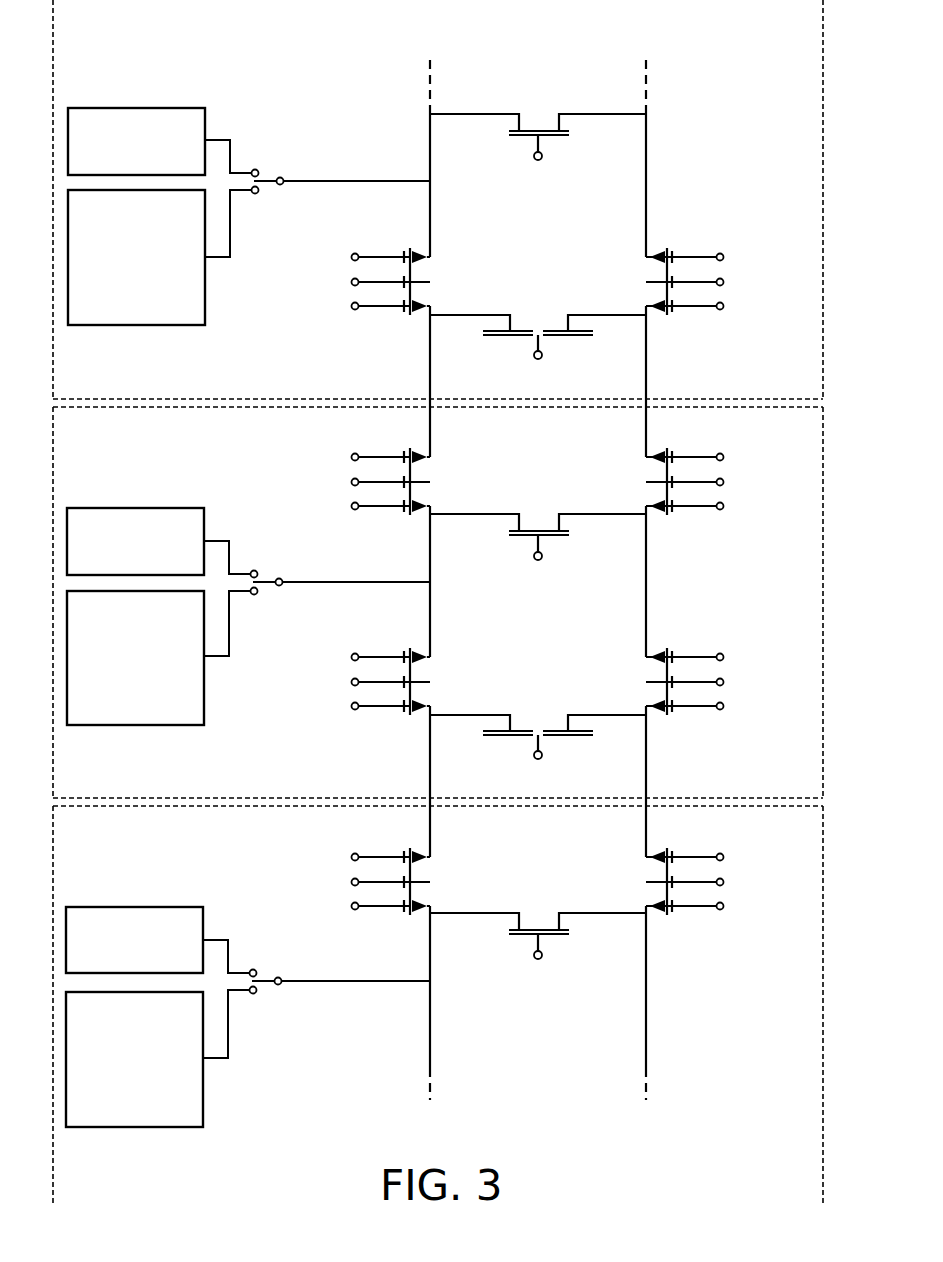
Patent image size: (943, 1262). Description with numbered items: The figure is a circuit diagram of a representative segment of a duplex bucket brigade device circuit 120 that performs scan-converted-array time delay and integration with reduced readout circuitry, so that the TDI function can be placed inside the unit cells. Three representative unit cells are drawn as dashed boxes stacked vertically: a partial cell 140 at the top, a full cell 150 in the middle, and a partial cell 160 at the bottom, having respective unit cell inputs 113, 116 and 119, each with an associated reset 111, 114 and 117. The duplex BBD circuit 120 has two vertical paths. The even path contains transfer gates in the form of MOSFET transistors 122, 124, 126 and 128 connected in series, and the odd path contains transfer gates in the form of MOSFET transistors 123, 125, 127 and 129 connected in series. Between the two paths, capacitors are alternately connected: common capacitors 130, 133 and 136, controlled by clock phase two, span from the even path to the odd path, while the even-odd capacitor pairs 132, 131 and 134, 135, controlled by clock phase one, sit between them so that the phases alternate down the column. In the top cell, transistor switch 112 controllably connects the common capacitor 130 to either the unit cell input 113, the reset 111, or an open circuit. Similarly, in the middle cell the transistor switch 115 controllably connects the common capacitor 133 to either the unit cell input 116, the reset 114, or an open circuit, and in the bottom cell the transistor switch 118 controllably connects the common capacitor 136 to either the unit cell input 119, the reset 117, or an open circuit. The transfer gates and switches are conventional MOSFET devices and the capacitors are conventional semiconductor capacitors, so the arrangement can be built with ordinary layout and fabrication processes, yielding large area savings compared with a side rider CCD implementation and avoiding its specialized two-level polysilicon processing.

The reset 111 is at (118, 164).
The transistor switch 112 is at (268, 178).
The unit cell input 113 is at (118, 307).
The reset 114 is at (117, 565).
The transistor switch 115 is at (267, 579).
The unit cell input 116 is at (117, 708).
The reset 117 is at (116, 963).
The transistor switch 118 is at (266, 978).
The unit cell input 119 is at (116, 1109).
The duplex BBD circuit 120 is at (544, 59).
The MOSFET transistor 122 is at (406, 252).
The MOSFET transistor 123 is at (675, 313).
The MOSFET transistor 124 is at (406, 452).
The MOSFET transistor 125 is at (675, 513).
The MOSFET transistor 126 is at (406, 652).
The MOSFET transistor 127 is at (675, 713).
The MOSFET transistor 128 is at (406, 852).
The MOSFET transistor 129 is at (675, 913).
The common capacitor 130 is at (552, 139).
The odd capacitor 131 is at (554, 341).
The even capacitor 132 is at (523, 341).
The common capacitor 133 is at (552, 539).
The even capacitor 134 is at (523, 741).
The odd capacitor 135 is at (554, 741).
The common capacitor 136 is at (552, 938).
The partial cell 140 is at (806, 142).
The full cell 150 is at (806, 592).
The partial cell 160 is at (805, 1042).